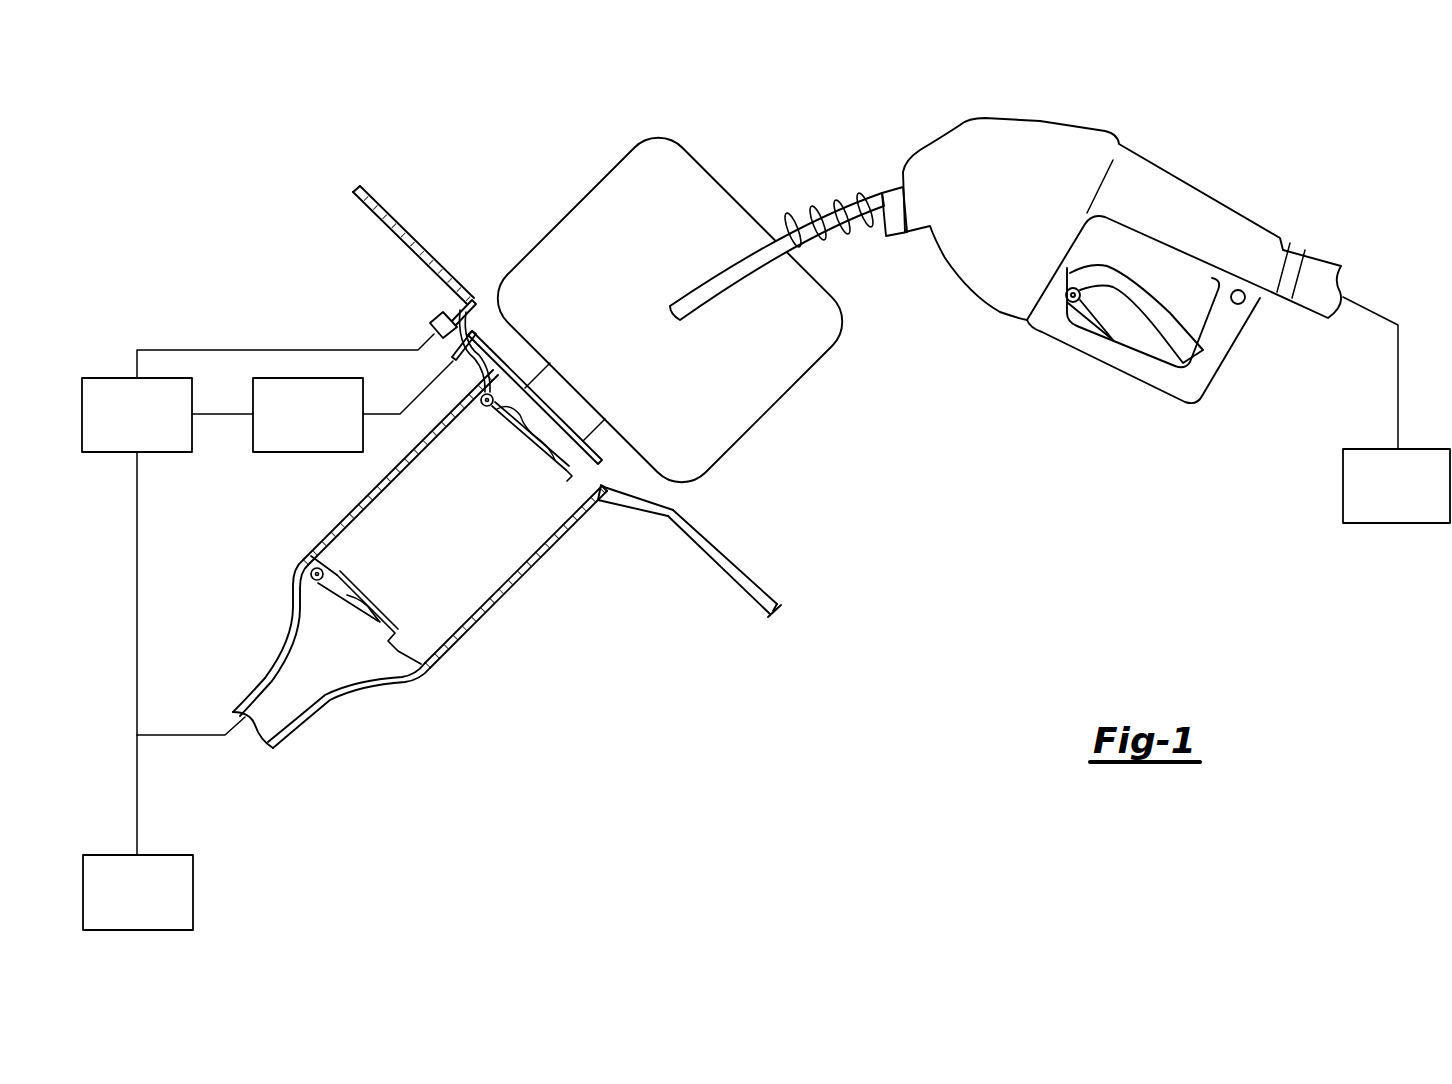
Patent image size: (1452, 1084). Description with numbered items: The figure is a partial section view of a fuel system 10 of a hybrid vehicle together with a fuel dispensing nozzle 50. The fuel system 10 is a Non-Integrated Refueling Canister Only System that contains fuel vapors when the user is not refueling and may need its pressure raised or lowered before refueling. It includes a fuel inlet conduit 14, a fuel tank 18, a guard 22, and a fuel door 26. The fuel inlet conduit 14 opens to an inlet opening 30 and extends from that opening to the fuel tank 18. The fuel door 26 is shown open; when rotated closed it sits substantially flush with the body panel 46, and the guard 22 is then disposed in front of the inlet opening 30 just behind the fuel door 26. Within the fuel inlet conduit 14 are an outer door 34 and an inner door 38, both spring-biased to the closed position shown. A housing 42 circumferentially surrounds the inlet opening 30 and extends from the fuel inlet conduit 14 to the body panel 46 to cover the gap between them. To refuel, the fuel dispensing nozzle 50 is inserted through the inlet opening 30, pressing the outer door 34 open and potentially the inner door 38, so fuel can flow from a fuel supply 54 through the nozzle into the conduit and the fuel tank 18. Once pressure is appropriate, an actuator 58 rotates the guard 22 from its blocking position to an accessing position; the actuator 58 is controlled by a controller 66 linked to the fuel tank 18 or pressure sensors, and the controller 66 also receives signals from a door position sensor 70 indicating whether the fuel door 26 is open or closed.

The fuel system 10 is at (492, 143).
The fuel inlet conduit 14 is at (447, 652).
The fuel tank 18 is at (193, 892).
The guard 22 is at (590, 447).
The fuel door 26 is at (810, 375).
The inlet opening 30 is at (606, 488).
The outer door 34 is at (560, 467).
The inner door 38 is at (383, 618).
The housing 42 is at (640, 508).
The body panel 46 is at (760, 589).
The fuel dispensing nozzle 50 is at (1080, 124).
The fuel supply 54 is at (1343, 486).
The actuator 58 is at (297, 439).
The controller 66 is at (126, 439).
The door position sensor 70 is at (434, 318).